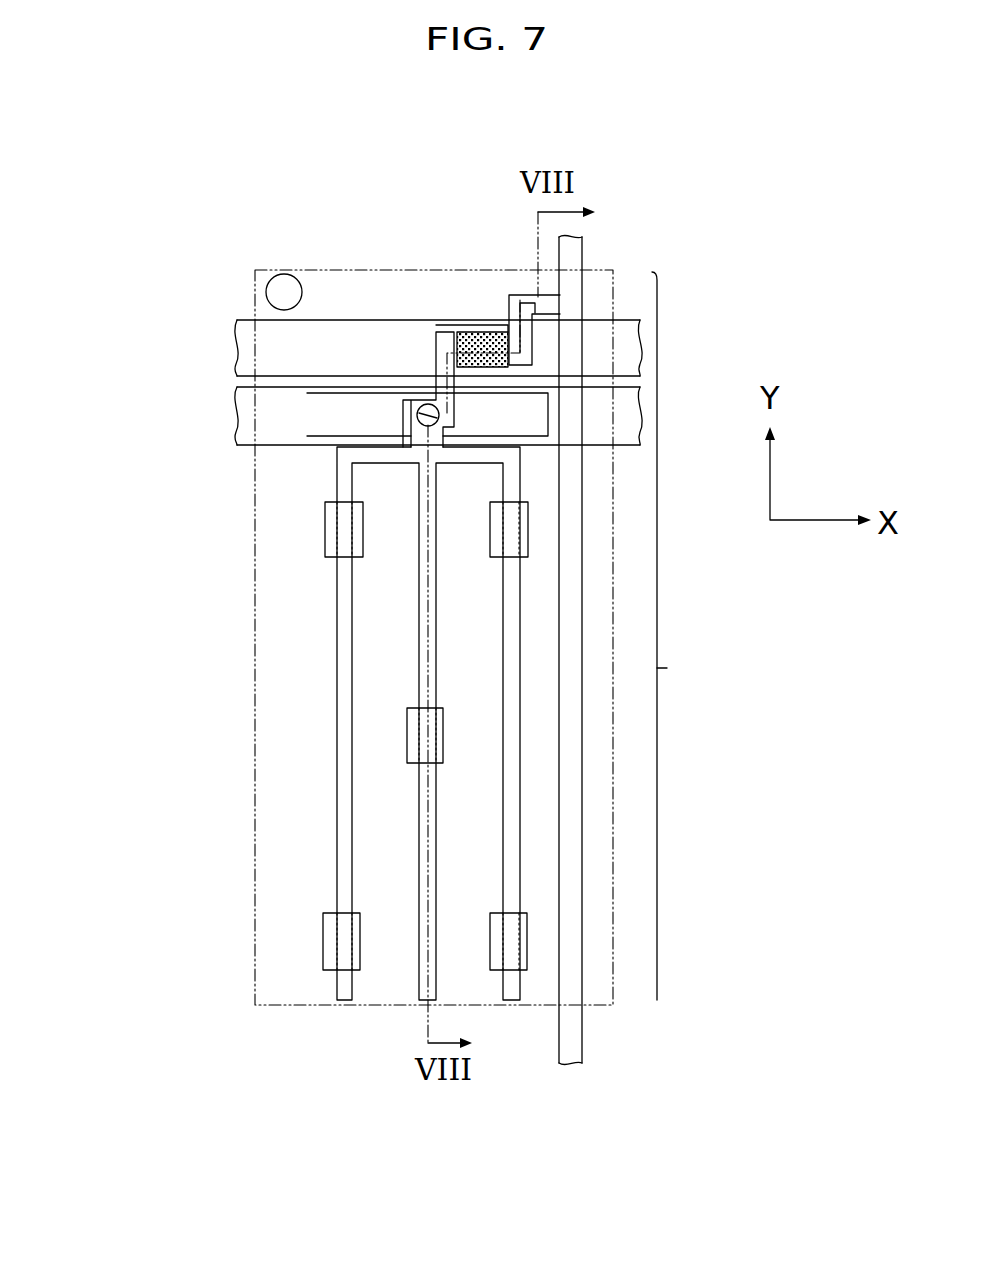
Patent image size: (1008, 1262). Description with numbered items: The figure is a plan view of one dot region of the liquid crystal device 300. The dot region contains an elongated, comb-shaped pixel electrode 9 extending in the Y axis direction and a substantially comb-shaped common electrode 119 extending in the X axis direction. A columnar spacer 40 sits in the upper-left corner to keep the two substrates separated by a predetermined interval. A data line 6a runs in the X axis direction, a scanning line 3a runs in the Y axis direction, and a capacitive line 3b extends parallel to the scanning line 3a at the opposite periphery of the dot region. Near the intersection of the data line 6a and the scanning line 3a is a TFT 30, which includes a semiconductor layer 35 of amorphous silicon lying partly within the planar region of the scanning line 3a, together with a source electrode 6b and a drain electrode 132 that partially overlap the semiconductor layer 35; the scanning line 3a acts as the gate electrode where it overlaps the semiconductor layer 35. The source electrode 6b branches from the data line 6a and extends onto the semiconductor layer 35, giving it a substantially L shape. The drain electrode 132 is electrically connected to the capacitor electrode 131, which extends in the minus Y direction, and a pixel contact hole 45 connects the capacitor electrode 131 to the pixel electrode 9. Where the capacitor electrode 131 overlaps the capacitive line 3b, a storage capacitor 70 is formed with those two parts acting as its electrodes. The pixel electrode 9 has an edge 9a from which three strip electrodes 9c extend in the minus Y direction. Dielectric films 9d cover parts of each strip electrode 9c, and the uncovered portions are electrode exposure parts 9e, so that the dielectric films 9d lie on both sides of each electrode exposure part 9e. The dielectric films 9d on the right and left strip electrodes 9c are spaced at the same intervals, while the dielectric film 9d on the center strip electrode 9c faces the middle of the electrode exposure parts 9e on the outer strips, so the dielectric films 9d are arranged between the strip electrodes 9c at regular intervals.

The liquid crystal device 300 is at (680, 267).
The common electrode 119 is at (686, 636).
The scanning line 3a is at (248, 322).
The capacitive line 3b is at (248, 438).
The storage capacitor 70 is at (290, 427).
The capacitor electrode 131 is at (310, 413).
The columnar spacer 40 is at (285, 287).
The TFT 30 is at (456, 295).
The semiconductor layer 35 is at (490, 337).
The drain electrode 132 is at (440, 330).
The source electrode 6b is at (515, 300).
The data line 6a is at (573, 1040).
The pixel contact hole 45 is at (412, 420).
The edge 9a is at (377, 457).
The pixel electrode 9 is at (276, 572).
The strip electrode 9c is at (343, 990).
The dielectric film 9d is at (360, 940).
The electrode exposure part 9e is at (343, 870).